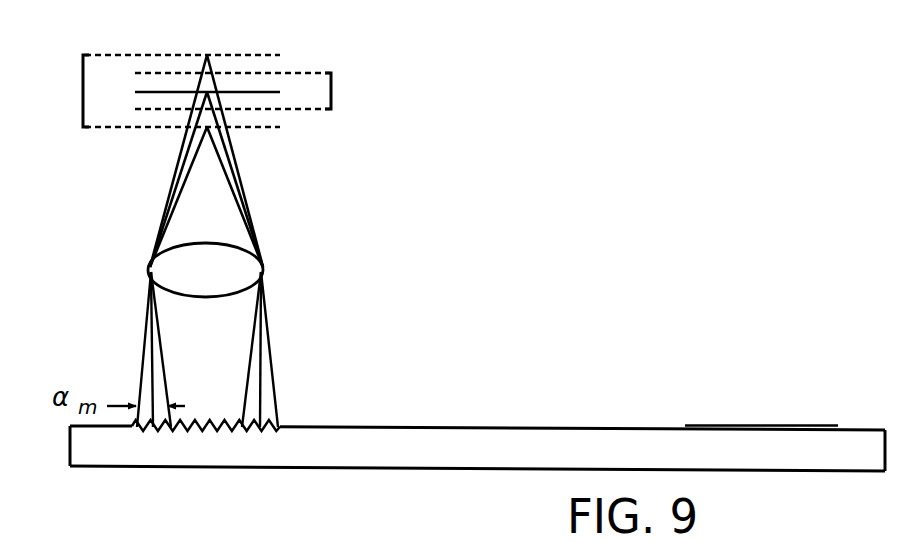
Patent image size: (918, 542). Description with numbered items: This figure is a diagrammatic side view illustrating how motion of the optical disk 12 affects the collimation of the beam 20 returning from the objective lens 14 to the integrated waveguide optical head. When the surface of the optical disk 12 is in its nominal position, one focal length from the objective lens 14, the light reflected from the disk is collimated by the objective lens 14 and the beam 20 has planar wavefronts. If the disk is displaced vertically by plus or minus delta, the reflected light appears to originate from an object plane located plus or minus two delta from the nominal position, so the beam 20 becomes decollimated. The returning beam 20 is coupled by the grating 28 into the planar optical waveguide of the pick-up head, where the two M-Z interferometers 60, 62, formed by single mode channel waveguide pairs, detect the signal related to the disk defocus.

The optical disk 12 is at (252, 91).
The objective lens 14 is at (264, 273).
The beam 20 is at (260, 377).
The grating 28 is at (212, 426).
The M-Z interferometer 60 is at (772, 402).
The M-Z interferometer 62 is at (747, 425).